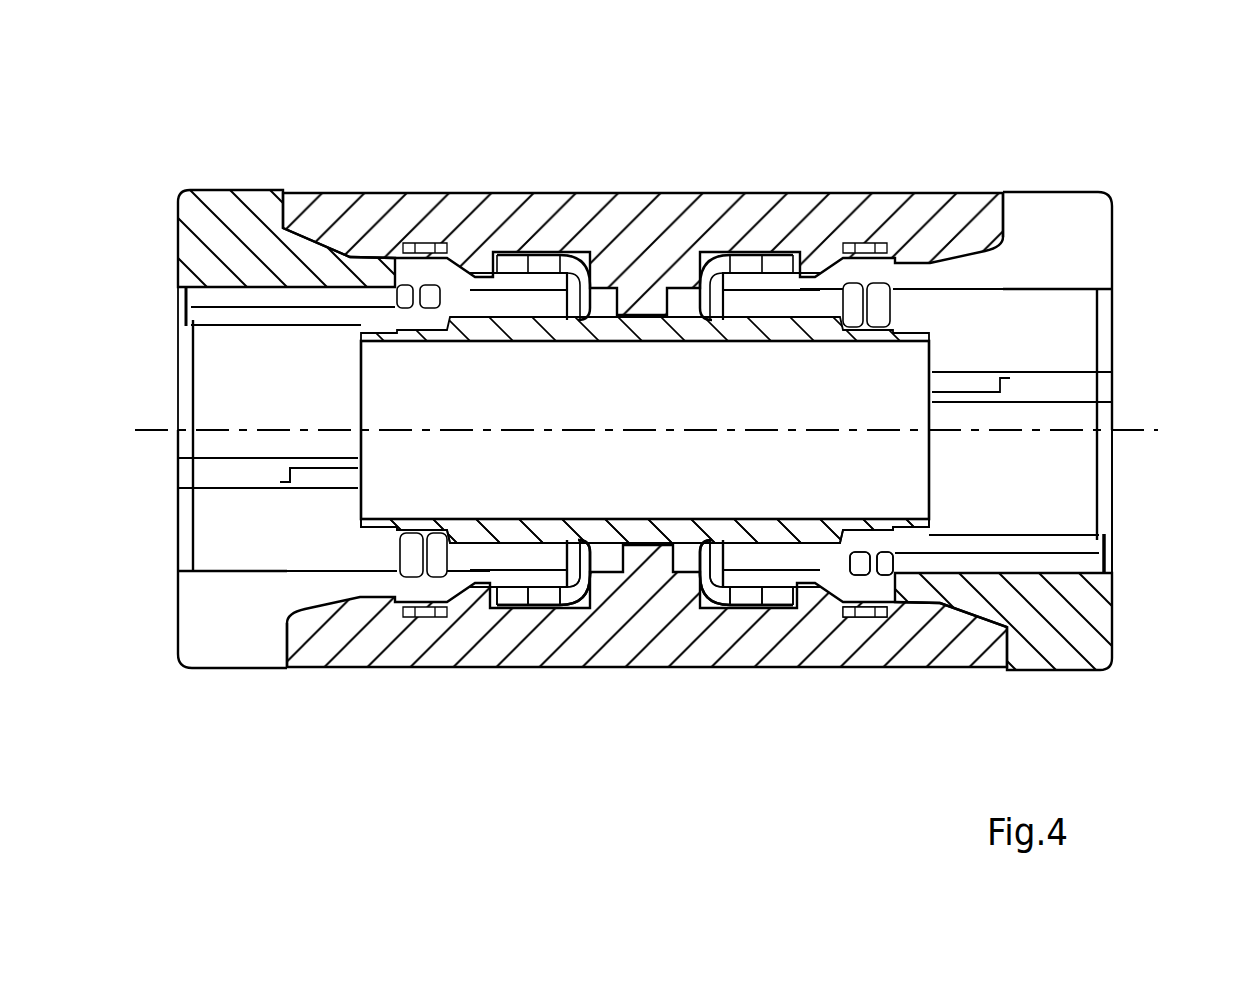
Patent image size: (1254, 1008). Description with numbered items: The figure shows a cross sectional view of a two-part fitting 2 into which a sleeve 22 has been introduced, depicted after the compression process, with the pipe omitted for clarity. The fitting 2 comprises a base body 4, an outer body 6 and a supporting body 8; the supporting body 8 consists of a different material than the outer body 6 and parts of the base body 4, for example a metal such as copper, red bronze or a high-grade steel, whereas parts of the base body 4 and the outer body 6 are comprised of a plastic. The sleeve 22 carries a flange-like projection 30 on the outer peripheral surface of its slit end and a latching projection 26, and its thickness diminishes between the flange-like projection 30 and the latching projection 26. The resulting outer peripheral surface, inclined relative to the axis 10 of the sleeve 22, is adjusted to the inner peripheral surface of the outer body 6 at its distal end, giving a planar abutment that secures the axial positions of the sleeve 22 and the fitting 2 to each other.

The fitting 2 is at (693, 389).
The base body 4 is at (644, 690).
The outer body 6 is at (965, 653).
The supporting body 8 is at (836, 335).
The axis 10 is at (1145, 428).
The sleeve 22 is at (1087, 186).
The latching projection 26 is at (866, 270).
The flange-like projection 30 is at (1105, 650).